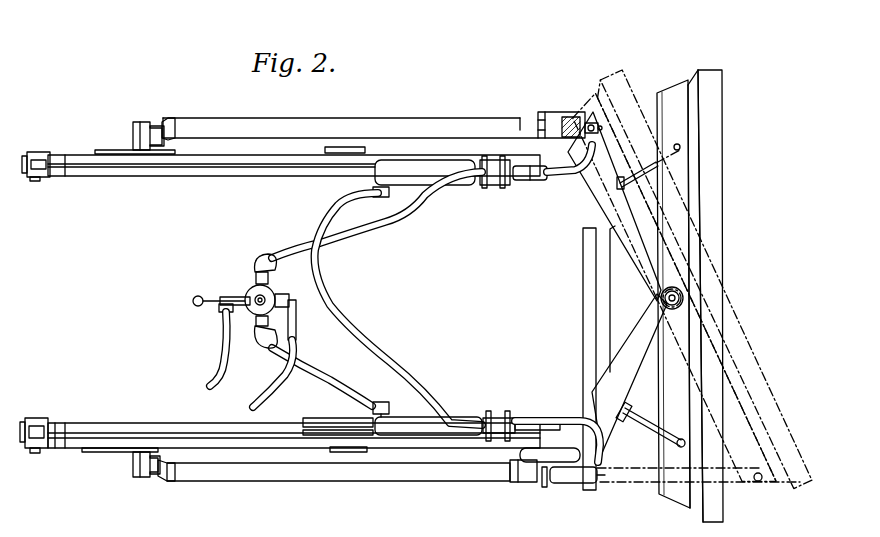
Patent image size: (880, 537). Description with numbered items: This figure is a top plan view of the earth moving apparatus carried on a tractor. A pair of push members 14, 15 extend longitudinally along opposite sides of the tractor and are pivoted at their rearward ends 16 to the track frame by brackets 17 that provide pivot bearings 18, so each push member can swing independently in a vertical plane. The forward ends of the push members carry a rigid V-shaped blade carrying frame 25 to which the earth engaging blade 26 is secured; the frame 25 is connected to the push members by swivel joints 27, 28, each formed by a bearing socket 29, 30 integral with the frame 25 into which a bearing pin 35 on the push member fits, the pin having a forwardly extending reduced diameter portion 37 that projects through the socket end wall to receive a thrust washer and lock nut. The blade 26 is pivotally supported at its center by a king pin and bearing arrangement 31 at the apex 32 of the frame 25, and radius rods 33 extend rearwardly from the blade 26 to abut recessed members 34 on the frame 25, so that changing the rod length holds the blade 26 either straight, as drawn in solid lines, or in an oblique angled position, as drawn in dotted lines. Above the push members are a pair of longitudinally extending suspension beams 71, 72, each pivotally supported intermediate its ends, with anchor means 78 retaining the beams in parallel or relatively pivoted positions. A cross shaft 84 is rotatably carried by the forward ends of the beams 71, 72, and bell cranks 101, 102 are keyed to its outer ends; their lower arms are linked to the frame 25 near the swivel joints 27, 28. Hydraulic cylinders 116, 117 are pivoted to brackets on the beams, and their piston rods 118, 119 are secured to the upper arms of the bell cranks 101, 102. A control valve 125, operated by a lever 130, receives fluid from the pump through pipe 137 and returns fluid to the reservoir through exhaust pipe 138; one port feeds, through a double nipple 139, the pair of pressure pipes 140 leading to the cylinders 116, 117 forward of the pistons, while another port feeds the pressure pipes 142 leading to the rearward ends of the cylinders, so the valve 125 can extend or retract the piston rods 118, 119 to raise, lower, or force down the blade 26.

The push member 14 is at (320, 118).
The push member 15 is at (262, 470).
The rearward end 16 is at (168, 118).
The bracket 17 is at (133, 138).
The pivot bearing 18 is at (148, 124).
The blade carrying frame 25 is at (625, 358).
The earth engaging blade 26 is at (710, 223).
The swivel joint 27 is at (565, 110).
The swivel joint 28 is at (560, 485).
The bearing socket 29 is at (584, 122).
The bearing socket 30 is at (571, 483).
The king pin and bearing arrangement 31 is at (683, 291).
The apex 32 is at (683, 268).
The radius rod 33 is at (630, 178).
The recessed member 34 is at (630, 411).
The bearing pin 35 is at (545, 112).
The reduced diameter portion 37 is at (618, 88).
The suspension beam 71 is at (258, 153).
The suspension beam 72 is at (217, 442).
The anchor means 78 is at (40, 150).
The cross shaft 84 is at (584, 297).
The bell crank 101 is at (572, 407).
The bell crank 102 is at (553, 181).
The hydraulic cylinder 116 is at (428, 437).
The hydraulic cylinder 117 is at (418, 162).
The piston rod 118 is at (512, 414).
The piston rod 119 is at (508, 160).
The control valve 125 is at (246, 290).
The lever 130 is at (208, 296).
The pipe 137 is at (220, 338).
The exhaust pipe 138 is at (283, 384).
The double nipple 139 is at (594, 506).
The pressure pipe 140 is at (408, 222).
The pressure pipe 142 is at (319, 262).